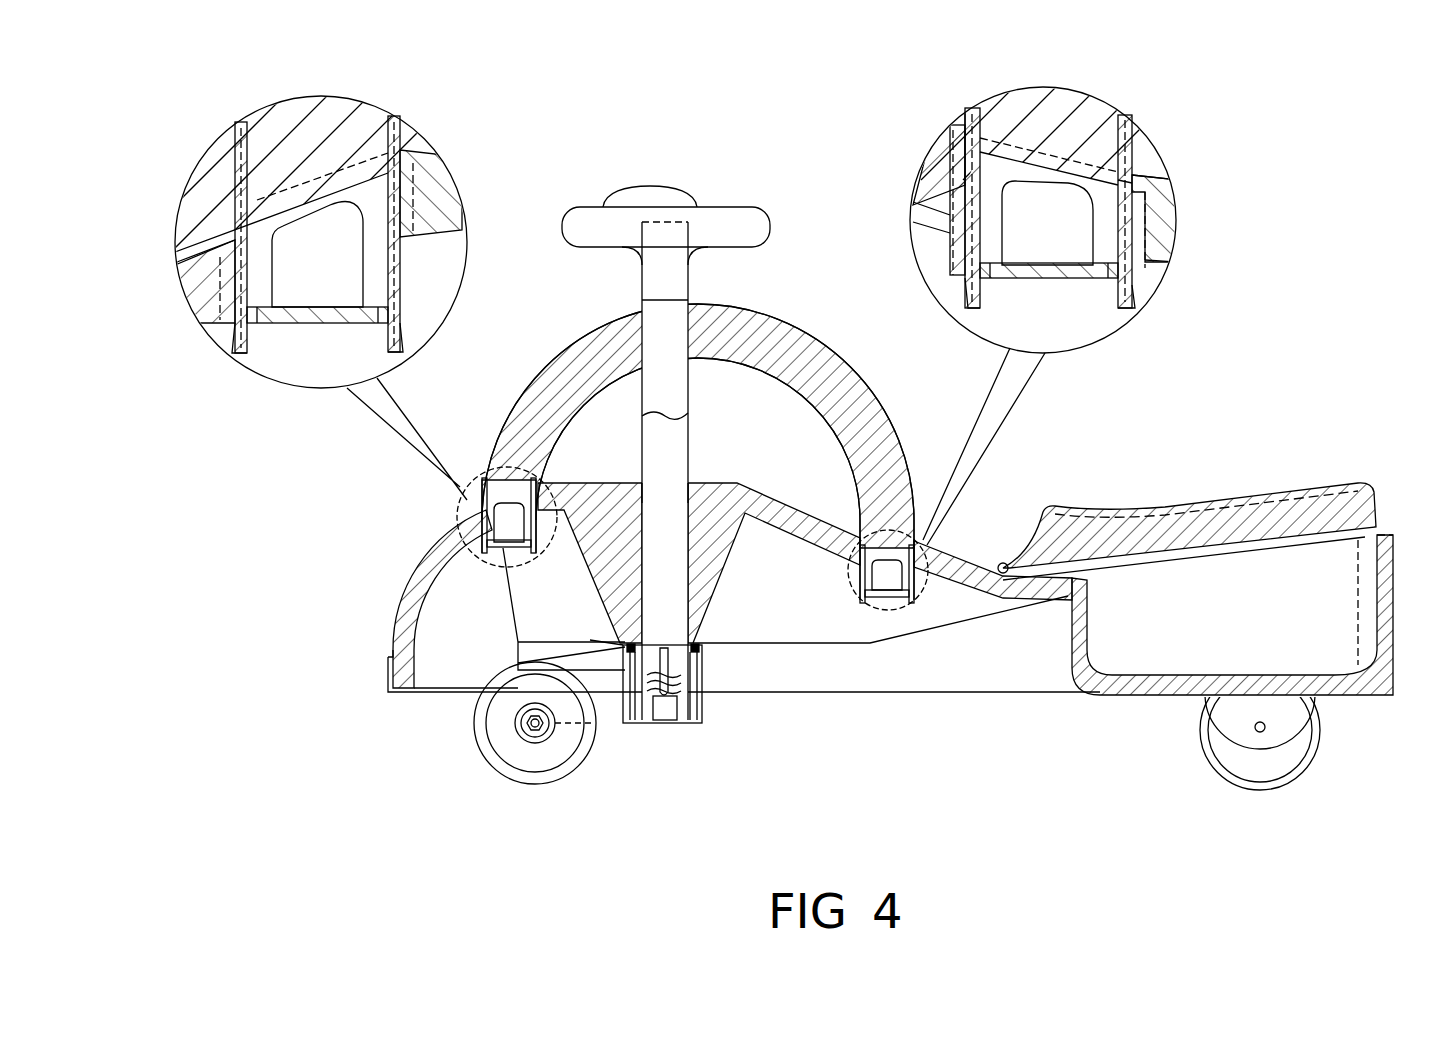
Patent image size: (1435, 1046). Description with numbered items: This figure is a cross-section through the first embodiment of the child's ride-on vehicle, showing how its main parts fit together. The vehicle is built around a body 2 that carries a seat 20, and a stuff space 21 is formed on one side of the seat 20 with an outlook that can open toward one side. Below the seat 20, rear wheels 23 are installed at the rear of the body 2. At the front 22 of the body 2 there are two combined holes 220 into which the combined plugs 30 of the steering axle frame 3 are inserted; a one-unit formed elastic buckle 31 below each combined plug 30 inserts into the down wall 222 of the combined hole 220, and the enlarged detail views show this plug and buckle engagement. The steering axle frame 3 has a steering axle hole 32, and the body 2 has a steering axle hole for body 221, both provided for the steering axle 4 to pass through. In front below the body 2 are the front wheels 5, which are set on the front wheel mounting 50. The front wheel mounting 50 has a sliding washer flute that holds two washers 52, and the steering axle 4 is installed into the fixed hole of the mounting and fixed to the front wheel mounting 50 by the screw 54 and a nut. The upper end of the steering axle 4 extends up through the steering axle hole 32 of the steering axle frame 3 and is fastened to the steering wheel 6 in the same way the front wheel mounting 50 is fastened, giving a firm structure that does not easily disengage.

The body 2 is at (1005, 683).
The steering axle frame 3 is at (832, 383).
The steering axle 4 is at (637, 427).
The front wheels 5 is at (503, 748).
The steering wheel 6 is at (730, 225).
The seat 20 is at (1238, 512).
The stuff space 21 is at (1284, 583).
The front 22 is at (742, 508).
The rear wheels 23 is at (1287, 760).
The combined plug 30 is at (300, 323).
The elastic buckle 31 is at (393, 343).
The steering axle hole 32 is at (720, 292).
The front wheel mounting 50 is at (615, 717).
The washer 52 is at (707, 655).
The screw 54 is at (663, 700).
The combined holes 220 is at (415, 131).
The steering axle hole for body 221 is at (697, 458).
The down wall 222 is at (1148, 292).